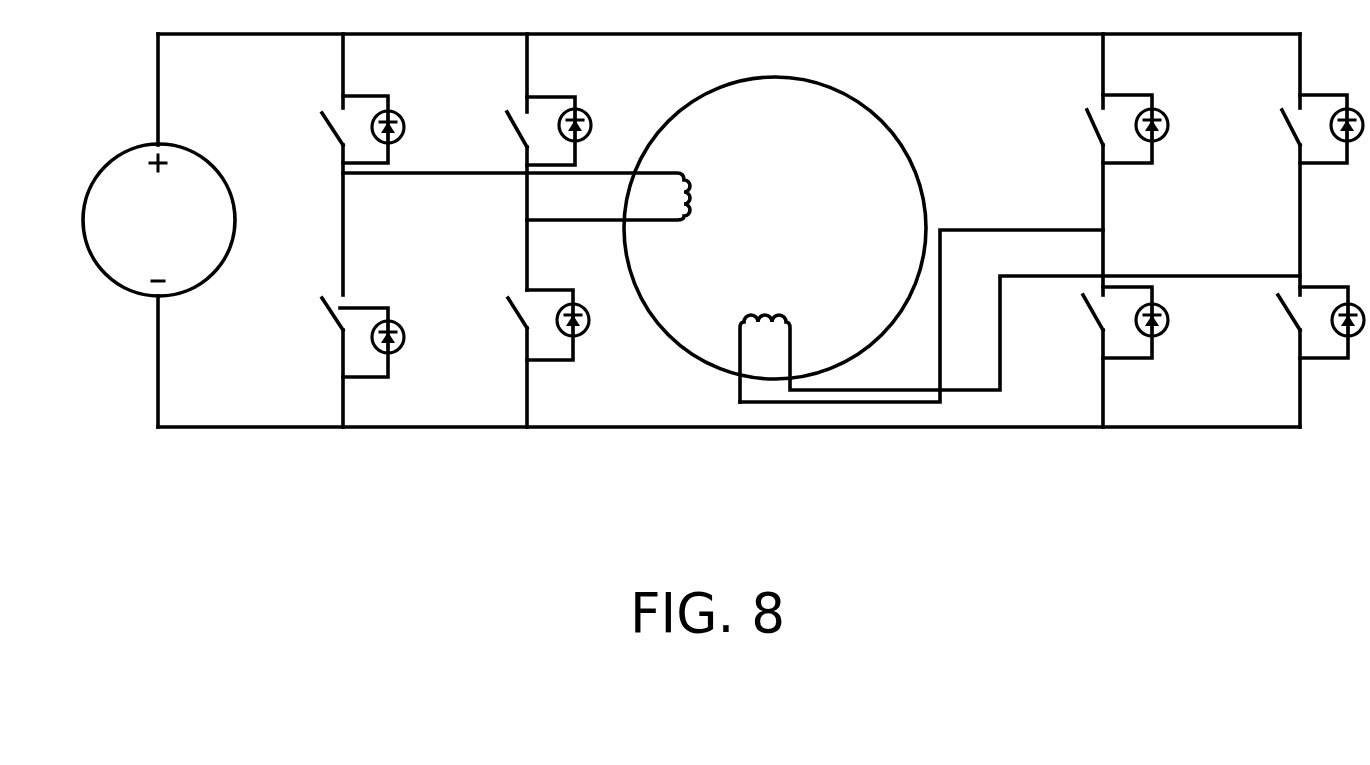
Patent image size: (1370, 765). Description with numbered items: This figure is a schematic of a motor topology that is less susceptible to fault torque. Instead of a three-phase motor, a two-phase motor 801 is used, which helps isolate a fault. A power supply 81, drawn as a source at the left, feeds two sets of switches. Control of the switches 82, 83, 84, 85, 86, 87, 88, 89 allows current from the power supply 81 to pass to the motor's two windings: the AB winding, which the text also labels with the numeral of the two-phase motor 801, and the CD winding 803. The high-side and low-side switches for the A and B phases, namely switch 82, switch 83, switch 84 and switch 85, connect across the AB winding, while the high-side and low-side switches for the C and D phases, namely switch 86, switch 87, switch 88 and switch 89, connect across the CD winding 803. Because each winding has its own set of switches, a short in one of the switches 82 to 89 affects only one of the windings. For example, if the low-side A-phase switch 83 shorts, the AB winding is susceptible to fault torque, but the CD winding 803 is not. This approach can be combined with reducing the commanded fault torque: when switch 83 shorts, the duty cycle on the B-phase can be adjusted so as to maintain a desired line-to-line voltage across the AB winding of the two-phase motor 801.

The power supply 81 is at (108, 180).
The switch 82 is at (322, 115).
The switch QAL 83 is at (322, 298).
The switch 84 is at (507, 112).
The switch 85 is at (507, 298).
The switch 86 is at (1087, 112).
The switch 87 is at (1097, 325).
The switch 88 is at (1282, 112).
The switch 89 is at (1290, 328).
The two-phase motor 801 is at (809, 103).
The CD winding 803 is at (772, 343).